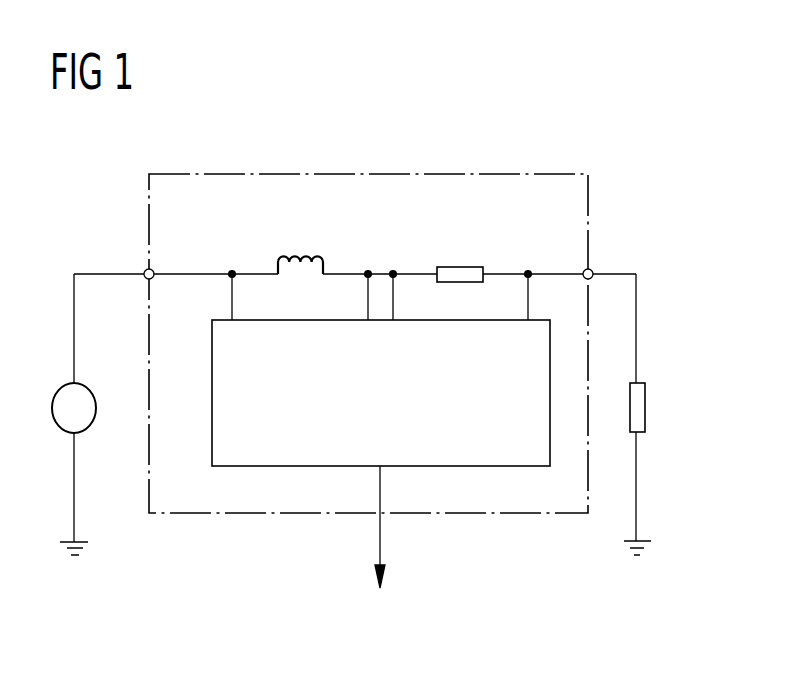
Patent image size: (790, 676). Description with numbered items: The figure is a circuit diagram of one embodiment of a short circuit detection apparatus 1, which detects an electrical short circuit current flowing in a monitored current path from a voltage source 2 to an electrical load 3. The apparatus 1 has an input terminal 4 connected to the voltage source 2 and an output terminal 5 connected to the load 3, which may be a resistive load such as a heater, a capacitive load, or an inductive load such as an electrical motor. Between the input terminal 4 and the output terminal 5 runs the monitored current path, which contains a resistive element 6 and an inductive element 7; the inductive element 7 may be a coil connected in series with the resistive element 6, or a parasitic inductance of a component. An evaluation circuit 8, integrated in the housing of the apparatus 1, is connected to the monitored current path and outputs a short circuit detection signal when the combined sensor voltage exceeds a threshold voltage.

The short circuit detection apparatus 1 is at (392, 172).
The voltage source 2 is at (85, 386).
The electrical load 3 is at (646, 409).
The input terminal 4 is at (145, 268).
The output terminal 5 is at (594, 269).
The resistive element 6 is at (474, 265).
The inductive element 7 is at (318, 255).
The evaluation circuit 8 is at (212, 393).